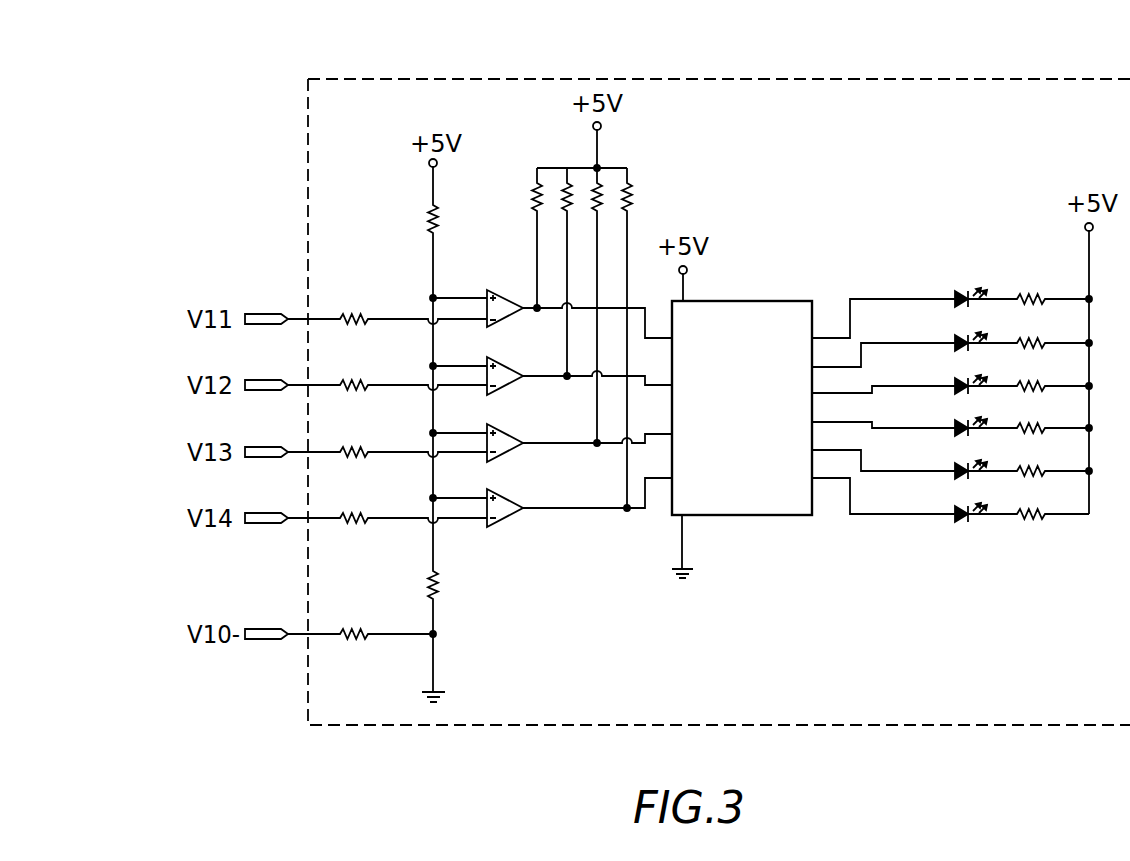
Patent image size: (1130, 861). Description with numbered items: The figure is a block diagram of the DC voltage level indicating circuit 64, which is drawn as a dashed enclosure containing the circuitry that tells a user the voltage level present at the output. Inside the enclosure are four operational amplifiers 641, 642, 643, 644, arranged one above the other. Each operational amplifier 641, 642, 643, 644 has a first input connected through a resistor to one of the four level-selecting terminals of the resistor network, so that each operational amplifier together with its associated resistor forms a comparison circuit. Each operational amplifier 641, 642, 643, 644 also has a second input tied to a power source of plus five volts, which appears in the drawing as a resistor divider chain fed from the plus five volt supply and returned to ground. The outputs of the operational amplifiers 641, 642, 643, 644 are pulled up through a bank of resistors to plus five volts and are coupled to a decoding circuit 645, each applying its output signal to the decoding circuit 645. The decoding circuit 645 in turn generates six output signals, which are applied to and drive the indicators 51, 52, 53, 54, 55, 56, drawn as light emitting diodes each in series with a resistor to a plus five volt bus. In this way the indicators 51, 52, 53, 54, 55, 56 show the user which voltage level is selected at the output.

The DC voltage level indicating circuit 64 is at (960, 100).
The operational amplifier 641 is at (498, 298).
The operational amplifier 642 is at (506, 368).
The operational amplifier 643 is at (506, 436).
The operational amplifier 644 is at (506, 501).
The decoding circuit 645 is at (780, 307).
The indicator 51 is at (957, 296).
The indicator 52 is at (957, 340).
The indicator 53 is at (957, 383).
The indicator 54 is at (957, 425).
The indicator 55 is at (957, 468).
The indicator 56 is at (957, 511).